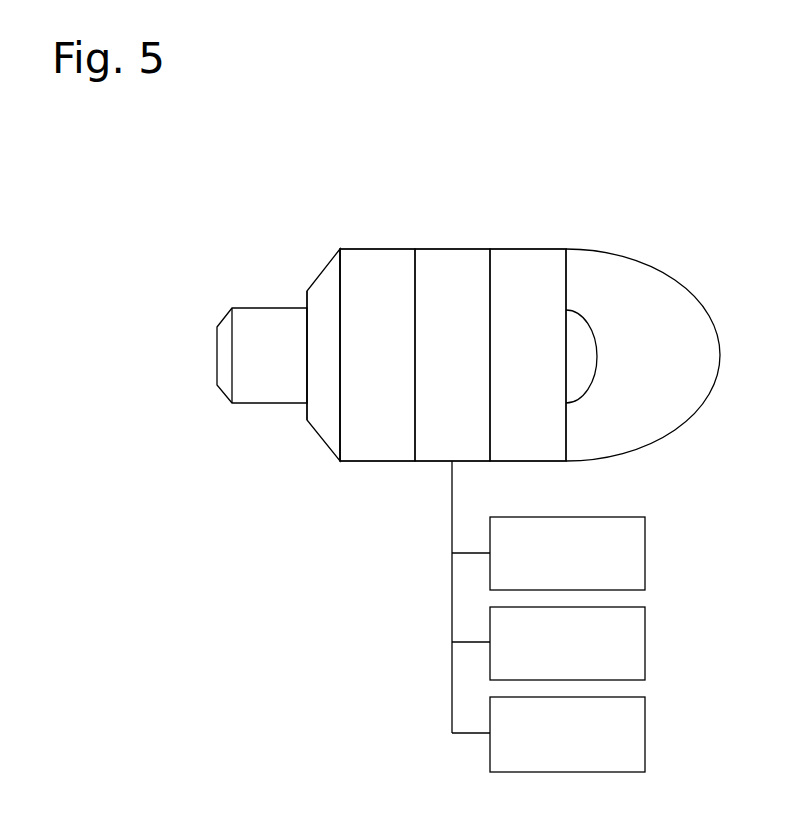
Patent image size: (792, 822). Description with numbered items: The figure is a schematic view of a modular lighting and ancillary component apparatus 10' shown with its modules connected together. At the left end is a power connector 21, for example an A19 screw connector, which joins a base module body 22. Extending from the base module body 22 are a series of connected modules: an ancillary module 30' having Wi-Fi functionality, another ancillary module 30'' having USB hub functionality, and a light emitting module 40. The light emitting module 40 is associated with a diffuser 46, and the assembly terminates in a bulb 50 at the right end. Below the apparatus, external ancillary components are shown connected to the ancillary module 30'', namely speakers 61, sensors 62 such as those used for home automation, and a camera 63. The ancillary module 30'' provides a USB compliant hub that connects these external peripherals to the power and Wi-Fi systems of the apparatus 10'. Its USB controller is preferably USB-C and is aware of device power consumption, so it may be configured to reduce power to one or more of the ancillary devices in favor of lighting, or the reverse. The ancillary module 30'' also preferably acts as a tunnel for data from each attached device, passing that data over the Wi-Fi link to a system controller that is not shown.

The modular lighting and ancillary component apparatus 10' is at (369, 480).
The power connector 21 is at (249, 352).
The base module body 22 is at (327, 403).
The ancillary module 30' is at (380, 278).
The ancillary module 30'' is at (462, 278).
The light emitting module 40 is at (527, 305).
The diffuser 46 is at (580, 352).
The bulb 50 is at (645, 305).
The speakers 61 is at (615, 550).
The sensors 62 is at (615, 628).
The camera 63 is at (615, 718).